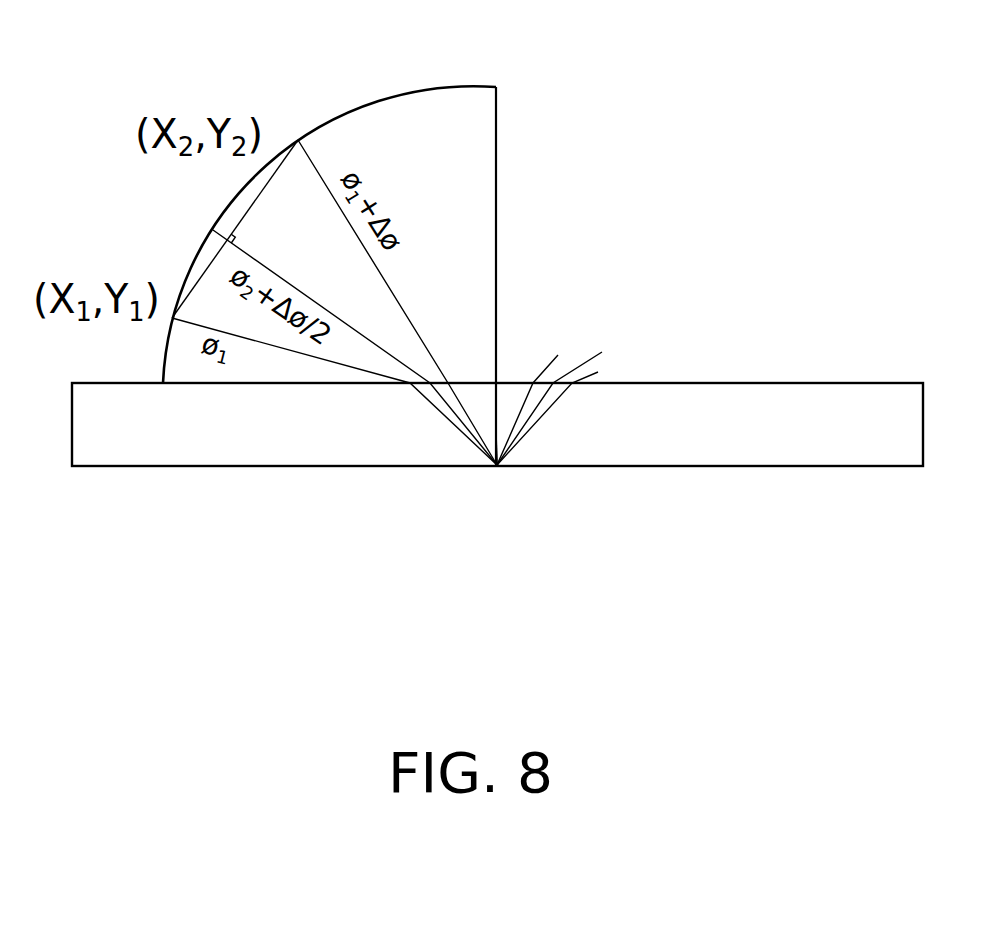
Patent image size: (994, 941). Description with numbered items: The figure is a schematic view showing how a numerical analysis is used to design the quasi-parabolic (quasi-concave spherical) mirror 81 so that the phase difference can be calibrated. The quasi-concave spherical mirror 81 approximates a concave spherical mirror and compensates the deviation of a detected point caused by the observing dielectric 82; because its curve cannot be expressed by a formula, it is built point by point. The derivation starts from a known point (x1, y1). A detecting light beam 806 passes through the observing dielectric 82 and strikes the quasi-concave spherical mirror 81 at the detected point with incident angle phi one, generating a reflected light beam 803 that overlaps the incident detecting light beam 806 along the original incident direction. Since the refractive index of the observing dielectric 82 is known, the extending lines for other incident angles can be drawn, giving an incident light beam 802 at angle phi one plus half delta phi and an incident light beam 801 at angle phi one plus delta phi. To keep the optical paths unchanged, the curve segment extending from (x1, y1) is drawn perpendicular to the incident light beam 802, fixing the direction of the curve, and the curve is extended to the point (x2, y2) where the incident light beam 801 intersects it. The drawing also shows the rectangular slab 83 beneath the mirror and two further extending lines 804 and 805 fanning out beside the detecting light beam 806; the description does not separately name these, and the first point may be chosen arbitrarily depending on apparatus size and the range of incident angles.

The quasi-concave spherical mirror 81 is at (329, 221).
The observing dielectric 82 is at (488, 479).
The lens / interface layer 83 is at (497, 424).
The incident light beam 801 is at (397, 302).
The incident light beam 802 is at (355, 347).
The reflected light beam 803 is at (334, 391).
The beam line 804 is at (534, 389).
The beam line 805 is at (572, 386).
The detecting light beam 806 is at (587, 403).